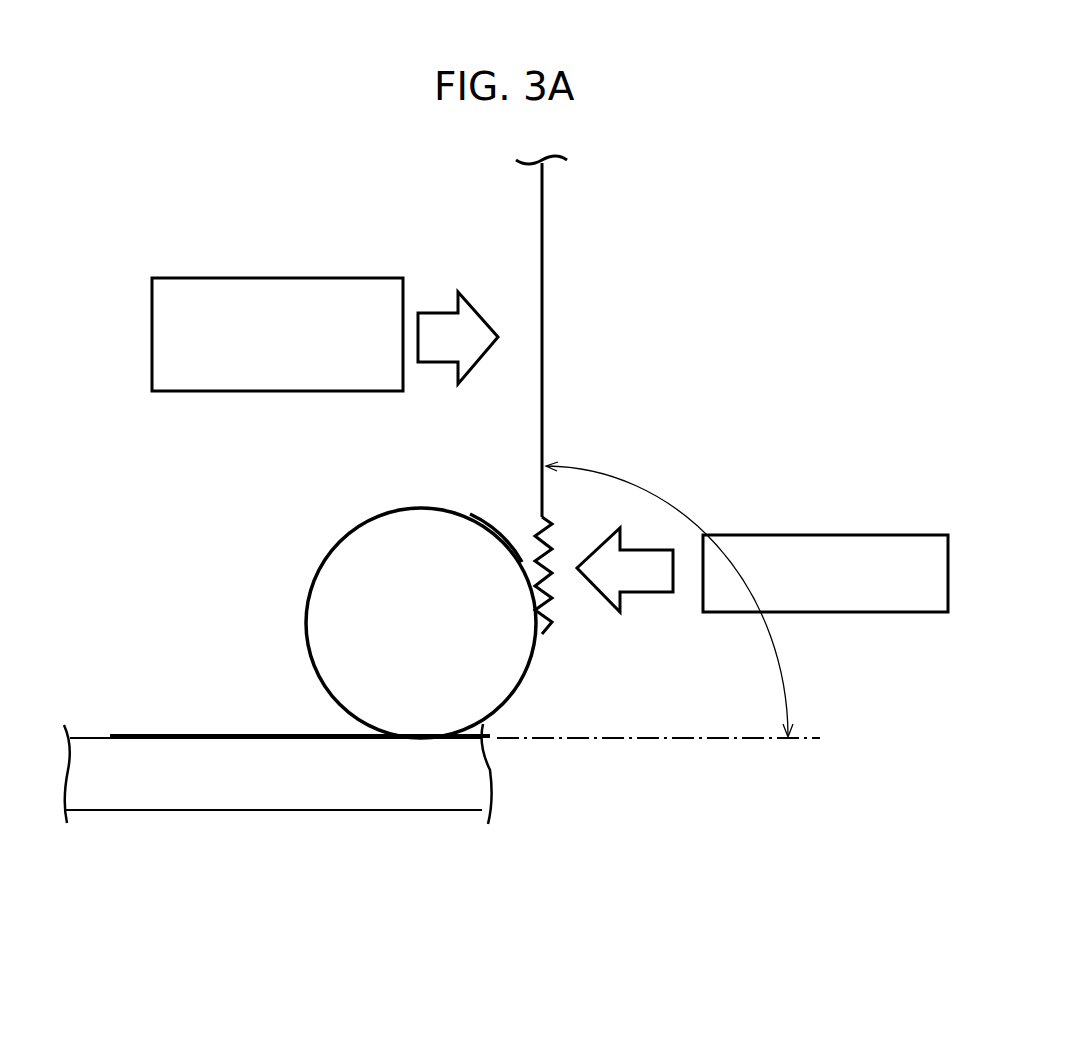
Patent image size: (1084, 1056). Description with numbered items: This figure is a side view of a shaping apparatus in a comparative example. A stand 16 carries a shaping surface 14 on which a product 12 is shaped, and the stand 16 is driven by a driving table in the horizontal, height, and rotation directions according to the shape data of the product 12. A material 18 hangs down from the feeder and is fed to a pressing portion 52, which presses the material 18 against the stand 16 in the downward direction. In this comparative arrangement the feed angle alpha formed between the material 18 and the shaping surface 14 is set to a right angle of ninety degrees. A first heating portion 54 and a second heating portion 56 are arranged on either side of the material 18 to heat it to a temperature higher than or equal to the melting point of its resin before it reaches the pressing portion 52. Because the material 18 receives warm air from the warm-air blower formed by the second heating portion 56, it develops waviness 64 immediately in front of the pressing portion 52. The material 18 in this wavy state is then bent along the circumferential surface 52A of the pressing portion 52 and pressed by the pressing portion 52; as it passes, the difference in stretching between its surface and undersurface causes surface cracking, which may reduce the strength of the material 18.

The product 12 is at (140, 704).
The shaping surface 14 is at (88, 738).
The stand 16 is at (498, 776).
The material 18 is at (549, 208).
The pressing portion 52 is at (318, 555).
The circumferential surface 52A is at (502, 532).
The first heating portion 54 is at (265, 275).
The second heating portion 56 is at (832, 531).
The waviness 64 is at (563, 563).
The feed angle alpha is at (669, 599).